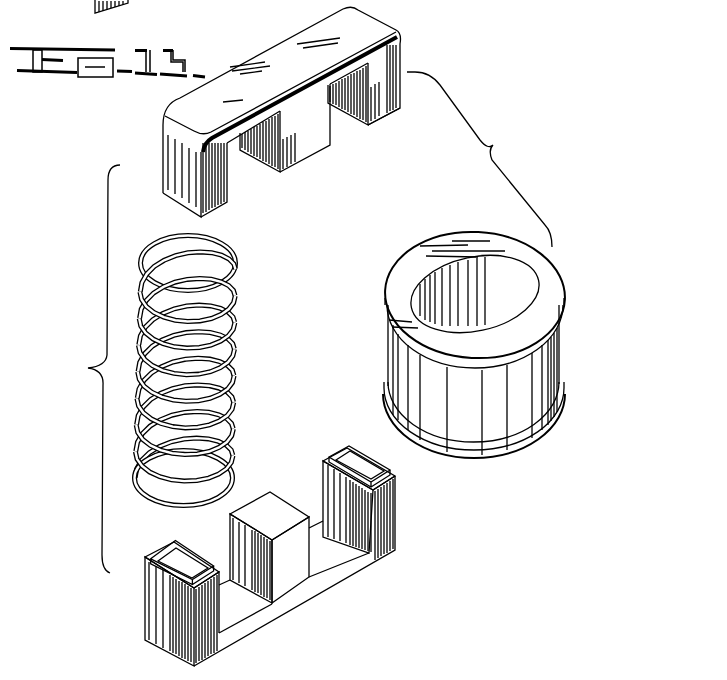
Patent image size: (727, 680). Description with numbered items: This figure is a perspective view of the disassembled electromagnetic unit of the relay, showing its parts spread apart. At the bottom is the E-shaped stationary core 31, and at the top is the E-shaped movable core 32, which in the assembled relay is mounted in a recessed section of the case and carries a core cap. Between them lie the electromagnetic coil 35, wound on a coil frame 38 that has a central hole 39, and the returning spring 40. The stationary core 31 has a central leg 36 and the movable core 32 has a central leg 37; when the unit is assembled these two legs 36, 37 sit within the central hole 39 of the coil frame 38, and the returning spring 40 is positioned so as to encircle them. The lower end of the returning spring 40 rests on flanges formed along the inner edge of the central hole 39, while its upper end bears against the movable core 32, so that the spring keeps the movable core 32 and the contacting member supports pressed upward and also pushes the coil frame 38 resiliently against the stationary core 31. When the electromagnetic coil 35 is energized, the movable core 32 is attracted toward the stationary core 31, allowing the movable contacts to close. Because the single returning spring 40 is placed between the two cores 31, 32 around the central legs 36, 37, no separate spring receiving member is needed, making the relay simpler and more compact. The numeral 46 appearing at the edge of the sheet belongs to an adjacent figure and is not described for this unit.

The E-shaped stationary core 31 is at (295, 556).
The E-shaped movable core 32 is at (288, 108).
The electromagnetic coil 35 is at (470, 342).
The central leg of the stationary core 36 is at (295, 563).
The central leg of the movable core 37 is at (303, 152).
The coil frame 38 is at (556, 276).
The central hole of the coil frame 39 is at (522, 304).
The returning spring 40 is at (237, 266).
The plate (FIG. 12) 46 is at (158, 0).